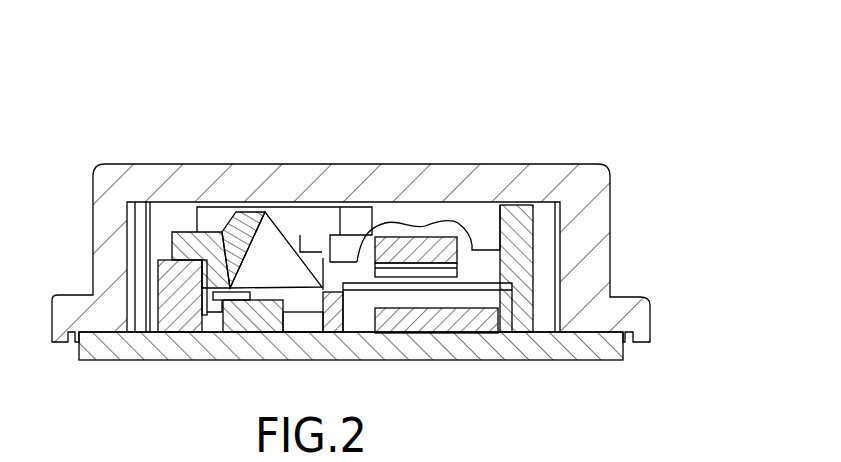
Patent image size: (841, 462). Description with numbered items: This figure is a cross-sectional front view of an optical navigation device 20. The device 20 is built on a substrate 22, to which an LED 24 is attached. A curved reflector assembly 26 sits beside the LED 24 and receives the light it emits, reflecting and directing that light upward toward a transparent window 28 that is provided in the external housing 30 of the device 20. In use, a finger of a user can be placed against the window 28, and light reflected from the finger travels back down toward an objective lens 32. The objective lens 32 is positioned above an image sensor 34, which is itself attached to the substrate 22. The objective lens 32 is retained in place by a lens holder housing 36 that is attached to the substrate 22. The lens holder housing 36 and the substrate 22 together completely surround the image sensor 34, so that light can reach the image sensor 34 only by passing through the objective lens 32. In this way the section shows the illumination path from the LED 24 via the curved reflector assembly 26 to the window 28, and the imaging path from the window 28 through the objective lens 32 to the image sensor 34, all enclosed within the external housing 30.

The optical navigation device 20 is at (632, 175).
The substrate 22 is at (263, 345).
The LED 24 is at (246, 321).
The curved reflector assembly 26 is at (272, 257).
The transparent window 28 is at (443, 157).
The external housing 30 is at (598, 252).
The objective lens 32 is at (408, 257).
The image sensor 34 is at (443, 324).
The lens holder housing 36 is at (447, 220).